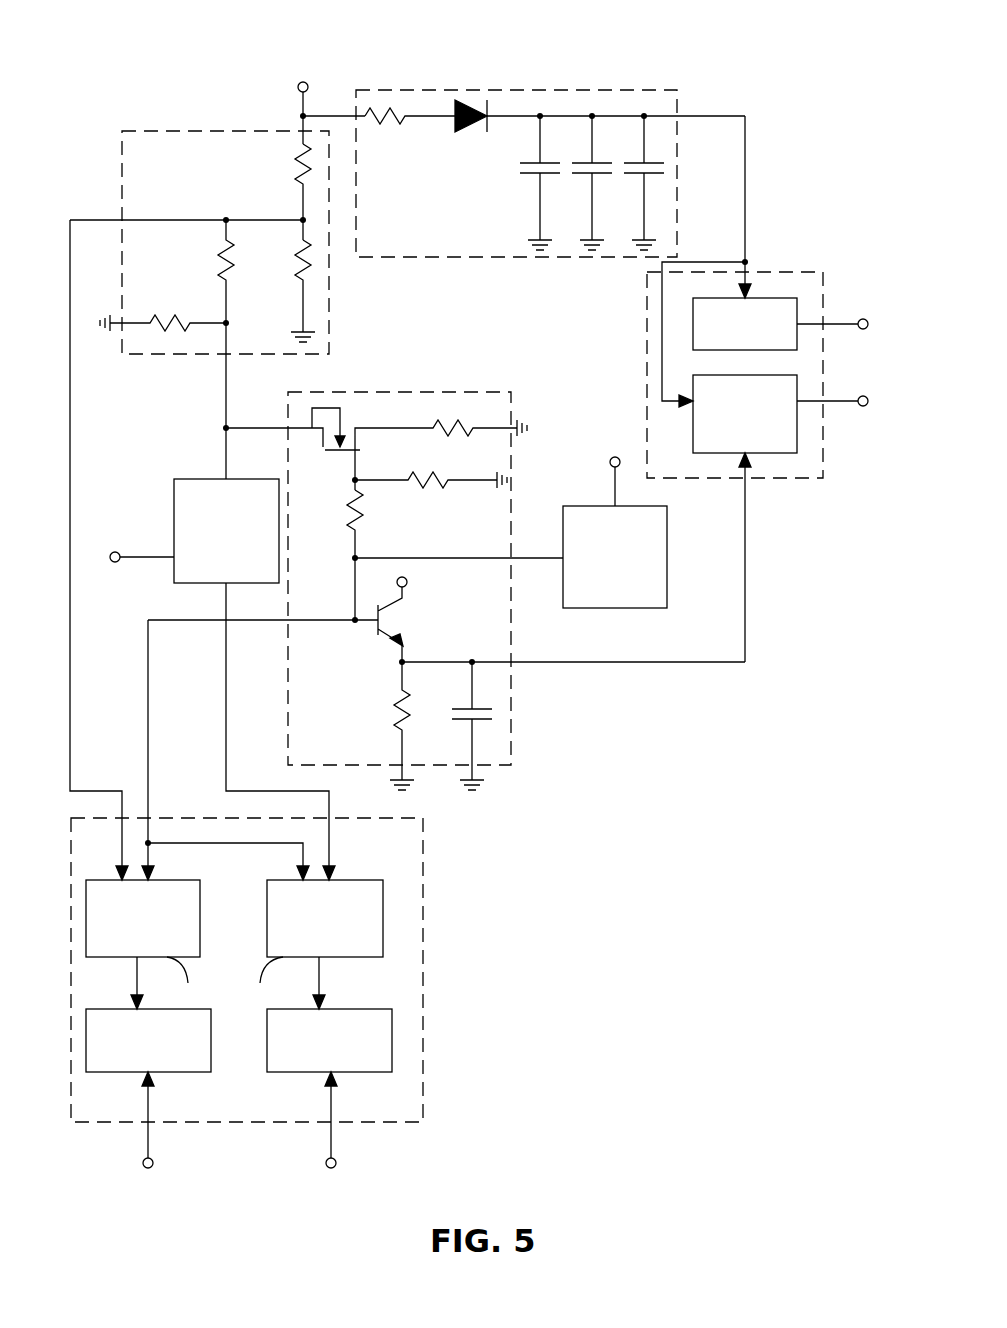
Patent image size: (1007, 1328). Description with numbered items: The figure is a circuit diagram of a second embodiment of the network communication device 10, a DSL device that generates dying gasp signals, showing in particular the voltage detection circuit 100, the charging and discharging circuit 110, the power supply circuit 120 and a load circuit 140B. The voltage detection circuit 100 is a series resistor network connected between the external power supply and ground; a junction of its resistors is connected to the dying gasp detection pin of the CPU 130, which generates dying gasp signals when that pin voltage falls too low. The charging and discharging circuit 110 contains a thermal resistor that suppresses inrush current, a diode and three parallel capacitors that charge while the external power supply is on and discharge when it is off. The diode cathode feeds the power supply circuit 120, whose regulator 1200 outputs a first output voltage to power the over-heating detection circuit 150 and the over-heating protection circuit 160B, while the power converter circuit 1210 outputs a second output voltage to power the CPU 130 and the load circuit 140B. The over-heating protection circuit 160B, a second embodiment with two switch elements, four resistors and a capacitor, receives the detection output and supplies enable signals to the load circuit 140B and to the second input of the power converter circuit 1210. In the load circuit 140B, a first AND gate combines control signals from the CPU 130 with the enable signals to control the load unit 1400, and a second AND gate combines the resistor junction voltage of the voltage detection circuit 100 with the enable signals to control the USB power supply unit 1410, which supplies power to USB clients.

The network communication device 10 is at (360, 36).
The voltage detection circuit 100 is at (153, 353).
The charging and discharging circuit 110 is at (437, 257).
The power supply circuit 120 is at (717, 478).
The regulator 1200 is at (770, 297).
The power converter circuit 1210 is at (770, 453).
The central processing unit 130 is at (187, 479).
The over-heating detection circuit 150 is at (590, 608).
The over-heating protection circuit 160B is at (511, 712).
The load circuit 140B is at (423, 1053).
The load unit 1400 is at (297, 1072).
The USB power supply unit 1410 is at (130, 1072).